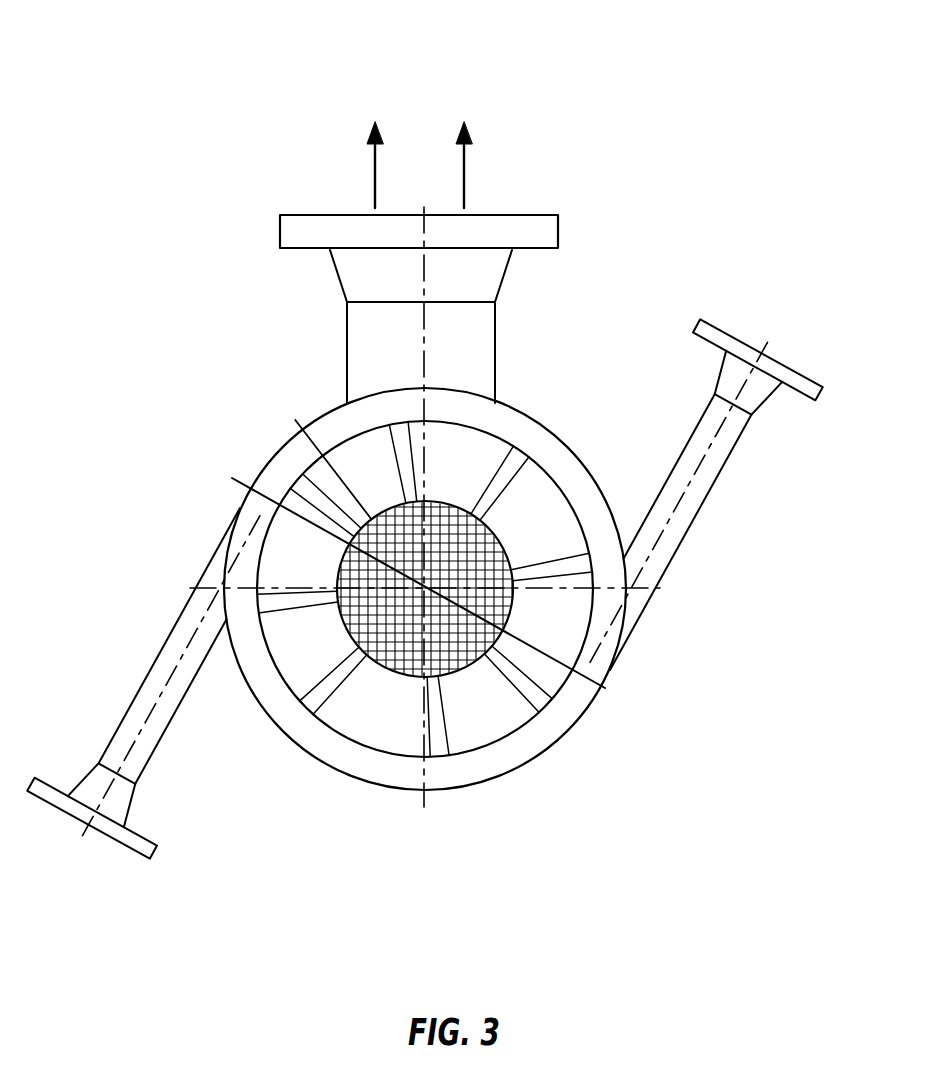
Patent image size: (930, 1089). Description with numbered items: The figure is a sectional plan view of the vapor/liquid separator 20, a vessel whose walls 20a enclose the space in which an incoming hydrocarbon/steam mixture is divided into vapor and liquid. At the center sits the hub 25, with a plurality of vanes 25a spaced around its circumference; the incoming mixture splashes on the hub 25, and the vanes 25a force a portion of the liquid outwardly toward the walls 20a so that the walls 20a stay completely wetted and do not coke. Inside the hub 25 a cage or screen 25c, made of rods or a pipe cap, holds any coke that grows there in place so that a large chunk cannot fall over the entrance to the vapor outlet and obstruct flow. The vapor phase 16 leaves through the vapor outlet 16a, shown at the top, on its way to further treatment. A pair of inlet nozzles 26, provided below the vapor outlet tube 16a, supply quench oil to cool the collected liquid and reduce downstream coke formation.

The vapor/liquid separator 20 is at (138, 83).
The walls 20a is at (543, 446).
The vapor phase 16 is at (463, 168).
The vapor outlet 16a is at (560, 229).
The hub 25 is at (431, 498).
The vanes 25a is at (527, 695).
The cage or screen 25c is at (505, 610).
The inlet nozzles 26 is at (725, 463).